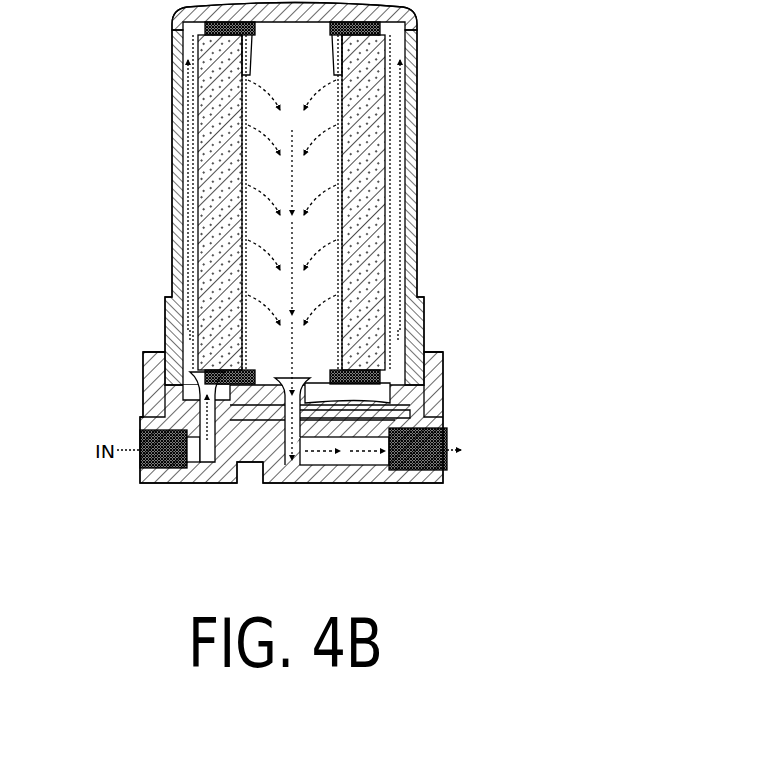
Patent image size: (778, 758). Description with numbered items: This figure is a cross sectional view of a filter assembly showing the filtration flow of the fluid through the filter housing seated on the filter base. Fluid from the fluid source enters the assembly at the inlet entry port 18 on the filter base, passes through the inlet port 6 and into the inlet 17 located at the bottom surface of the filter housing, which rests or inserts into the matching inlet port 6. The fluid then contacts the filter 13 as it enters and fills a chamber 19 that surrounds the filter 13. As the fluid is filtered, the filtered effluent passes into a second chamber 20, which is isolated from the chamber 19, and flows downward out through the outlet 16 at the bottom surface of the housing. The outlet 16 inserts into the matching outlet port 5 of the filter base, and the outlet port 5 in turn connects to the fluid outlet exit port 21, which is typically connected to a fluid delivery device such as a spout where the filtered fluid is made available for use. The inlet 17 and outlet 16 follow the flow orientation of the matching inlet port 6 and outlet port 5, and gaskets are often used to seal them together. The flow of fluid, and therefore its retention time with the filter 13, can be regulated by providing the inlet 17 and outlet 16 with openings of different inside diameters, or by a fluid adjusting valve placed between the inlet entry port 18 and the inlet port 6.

The outlet port 5 is at (297, 440).
The inlet port 6 is at (207, 445).
The filter 13 is at (207, 250).
The outlet 16 is at (310, 417).
The inlet 17 is at (197, 432).
The inlet entry port 18 is at (140, 465).
The chamber 19 is at (190, 75).
The second chamber 20 is at (263, 165).
The fluid outlet exit port 21 is at (447, 437).